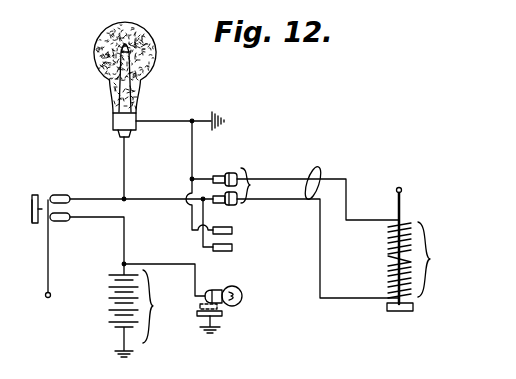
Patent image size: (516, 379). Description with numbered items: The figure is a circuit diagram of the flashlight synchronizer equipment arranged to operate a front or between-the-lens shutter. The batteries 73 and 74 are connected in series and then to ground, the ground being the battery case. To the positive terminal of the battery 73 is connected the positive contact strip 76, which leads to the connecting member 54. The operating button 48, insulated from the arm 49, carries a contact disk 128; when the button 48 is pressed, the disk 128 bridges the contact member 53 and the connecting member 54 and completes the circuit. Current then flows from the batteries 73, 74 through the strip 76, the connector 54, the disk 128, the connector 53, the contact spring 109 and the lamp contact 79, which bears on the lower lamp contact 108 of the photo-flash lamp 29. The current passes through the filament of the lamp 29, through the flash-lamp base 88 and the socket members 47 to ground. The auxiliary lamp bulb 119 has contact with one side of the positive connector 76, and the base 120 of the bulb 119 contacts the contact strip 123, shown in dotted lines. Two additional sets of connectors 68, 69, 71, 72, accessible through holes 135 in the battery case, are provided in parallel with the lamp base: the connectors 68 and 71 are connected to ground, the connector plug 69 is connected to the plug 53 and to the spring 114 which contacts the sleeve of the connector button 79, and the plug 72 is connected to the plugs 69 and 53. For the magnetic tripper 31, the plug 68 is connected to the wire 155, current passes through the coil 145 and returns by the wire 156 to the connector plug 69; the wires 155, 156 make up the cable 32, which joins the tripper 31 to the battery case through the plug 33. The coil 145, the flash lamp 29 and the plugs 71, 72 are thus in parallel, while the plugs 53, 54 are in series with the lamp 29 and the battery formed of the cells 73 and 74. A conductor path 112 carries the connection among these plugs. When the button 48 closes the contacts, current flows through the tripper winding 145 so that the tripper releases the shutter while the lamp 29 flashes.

The photo-flash lamp 29 is at (157, 63).
The flash-lamp base 88 is at (113, 122).
The lamp contact 108 is at (119, 134).
The lamp contact 79 is at (129, 137).
The battery socket members 47 is at (171, 118).
The spring 114 is at (153, 197).
The contact spring 109 is at (97, 198).
The contact member 53 is at (62, 194).
The connecting member 54 is at (65, 222).
The positive contact strip 76 is at (124, 231).
The contact disk 128 is at (44, 196).
The operating button 48 is at (32, 211).
The arm 49 is at (47, 265).
The battery 73 is at (143, 302).
The battery 74 is at (143, 330).
The base 120 is at (216, 289).
The auxiliary lamp bulb 119 is at (236, 305).
The contact strip 123 is at (197, 317).
The connector 68 is at (218, 175).
The connector plug 69 is at (219, 204).
The plug 33 is at (258, 185).
The wire 155 is at (347, 199).
The wire 156 is at (358, 298).
The cable 32 is at (318, 166).
The conductor 112 is at (194, 236).
The connector 71 is at (232, 230).
The connector 72 is at (232, 248).
The holes 135 is at (402, 200).
The magnetic tripper 31 is at (420, 260).
The coil 145 is at (390, 257).